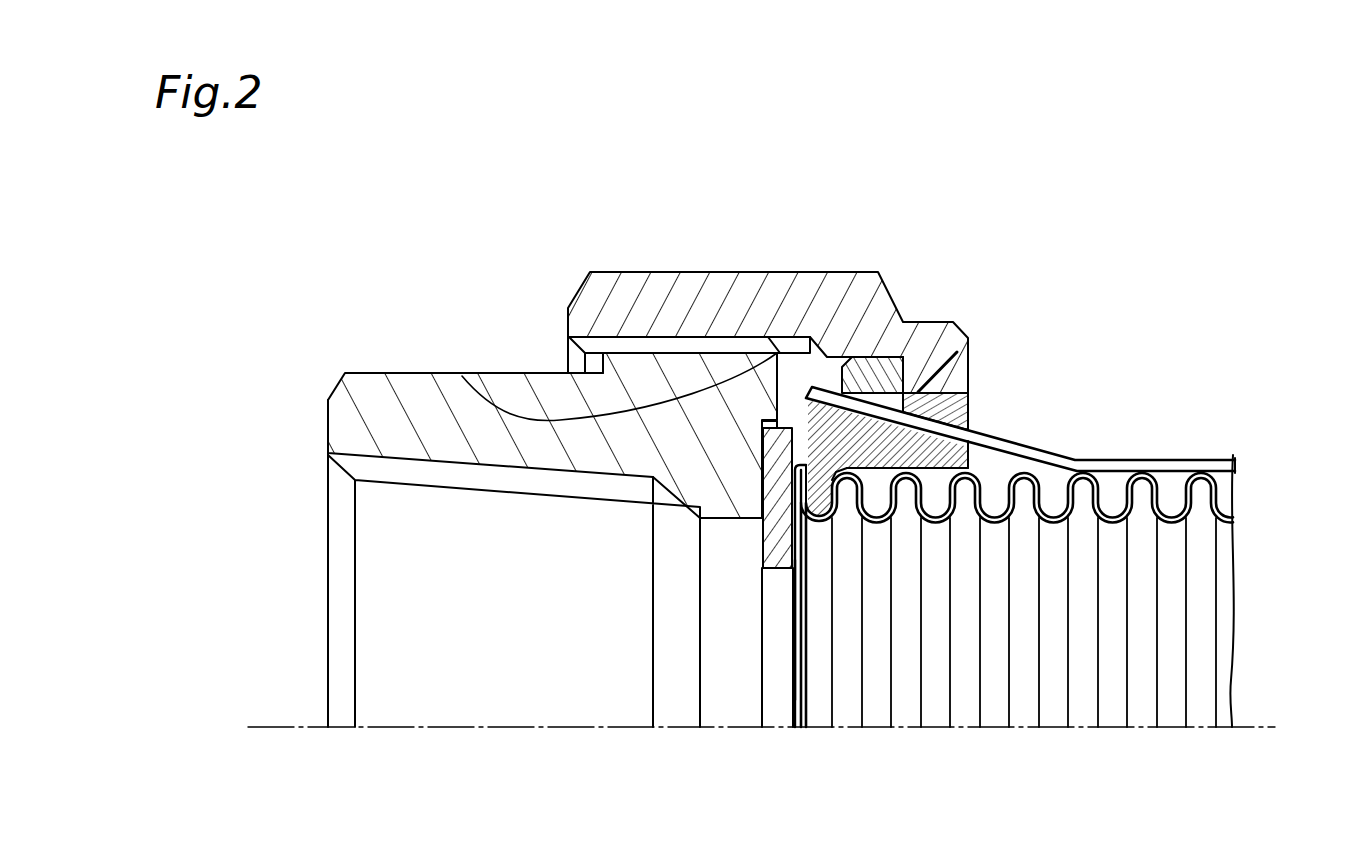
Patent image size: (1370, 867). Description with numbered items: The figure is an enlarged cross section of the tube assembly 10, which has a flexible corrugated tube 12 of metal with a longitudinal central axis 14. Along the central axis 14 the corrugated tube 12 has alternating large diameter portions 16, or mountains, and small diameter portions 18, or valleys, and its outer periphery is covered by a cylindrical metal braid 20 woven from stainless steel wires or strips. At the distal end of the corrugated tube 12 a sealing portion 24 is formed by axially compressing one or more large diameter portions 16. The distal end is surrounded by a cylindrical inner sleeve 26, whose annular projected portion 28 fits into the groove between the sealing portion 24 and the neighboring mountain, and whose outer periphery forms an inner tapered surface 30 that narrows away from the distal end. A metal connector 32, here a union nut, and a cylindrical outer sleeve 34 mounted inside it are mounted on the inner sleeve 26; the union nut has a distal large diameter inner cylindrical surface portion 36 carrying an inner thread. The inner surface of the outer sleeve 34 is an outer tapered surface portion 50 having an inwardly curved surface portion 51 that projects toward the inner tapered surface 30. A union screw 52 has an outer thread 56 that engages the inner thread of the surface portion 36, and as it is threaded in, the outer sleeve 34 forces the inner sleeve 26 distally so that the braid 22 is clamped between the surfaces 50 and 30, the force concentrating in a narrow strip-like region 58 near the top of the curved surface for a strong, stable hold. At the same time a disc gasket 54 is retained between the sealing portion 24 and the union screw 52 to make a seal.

The tube assembly 10 is at (630, 426).
The corrugated tube 12 is at (1075, 591).
The longitudinal central axis 14 is at (586, 732).
The large diameter portions 16 is at (1220, 500).
The small diameter portions 18 is at (1168, 522).
The metal braid 20 is at (1205, 460).
The braid 22 is at (793, 727).
The sealing portion 24 is at (795, 687).
The inner sleeve 26 is at (936, 470).
The annular projected portion 28 is at (817, 500).
The inner tapered surface 30 is at (808, 425).
The metal connector 32 is at (688, 272).
The outer sleeve 34 is at (980, 428).
The distal large diameter inner cylindrical surface portion 36 is at (596, 346).
The outer tapered surface portion 50 is at (856, 388).
The curved surface portion 51 is at (922, 365).
The union screw 52 is at (348, 373).
The disc gasket 54 is at (773, 528).
The outer thread 56 is at (462, 376).
The strip-like region 58 is at (968, 340).